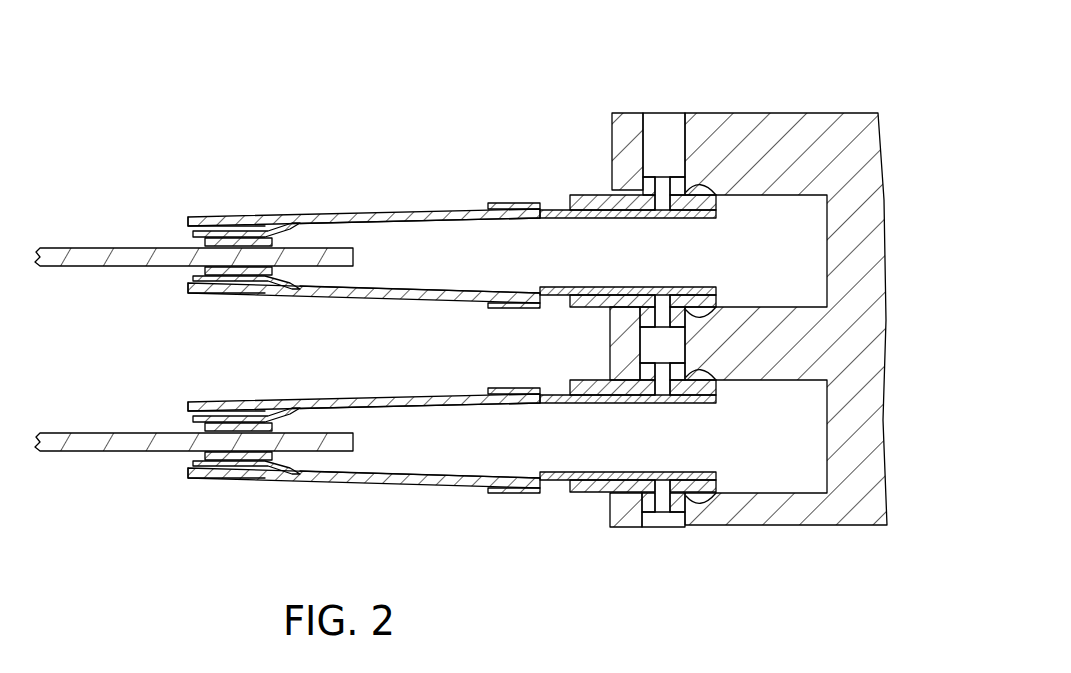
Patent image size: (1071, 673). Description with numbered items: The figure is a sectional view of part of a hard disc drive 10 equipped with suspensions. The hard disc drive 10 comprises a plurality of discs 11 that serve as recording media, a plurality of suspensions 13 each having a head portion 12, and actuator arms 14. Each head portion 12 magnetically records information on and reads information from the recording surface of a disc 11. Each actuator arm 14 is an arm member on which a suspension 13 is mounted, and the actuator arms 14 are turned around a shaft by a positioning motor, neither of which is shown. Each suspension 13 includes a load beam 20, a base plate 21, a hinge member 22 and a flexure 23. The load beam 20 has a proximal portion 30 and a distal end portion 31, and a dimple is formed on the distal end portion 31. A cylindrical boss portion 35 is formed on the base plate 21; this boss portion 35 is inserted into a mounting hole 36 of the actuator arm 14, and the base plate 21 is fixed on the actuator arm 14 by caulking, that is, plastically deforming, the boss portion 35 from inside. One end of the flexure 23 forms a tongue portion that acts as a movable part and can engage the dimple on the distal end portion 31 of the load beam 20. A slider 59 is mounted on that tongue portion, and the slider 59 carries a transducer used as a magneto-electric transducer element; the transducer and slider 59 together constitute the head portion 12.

The hard disc drive 10 is at (782, 86).
The disc 11 is at (94, 247).
The head portion 12 is at (187, 212).
The suspension 13 is at (323, 336).
The actuator arm 14 is at (726, 112).
The load beam 20 is at (358, 210).
The base plate 21 is at (576, 194).
The hinge member 22 is at (525, 287).
The flexure 23 is at (388, 225).
The proximal portion 30 is at (508, 206).
The distal end portion 31 is at (246, 214).
The boss portion 35 is at (718, 196).
The mounting hole 36 is at (645, 125).
The slider 59 is at (193, 235).